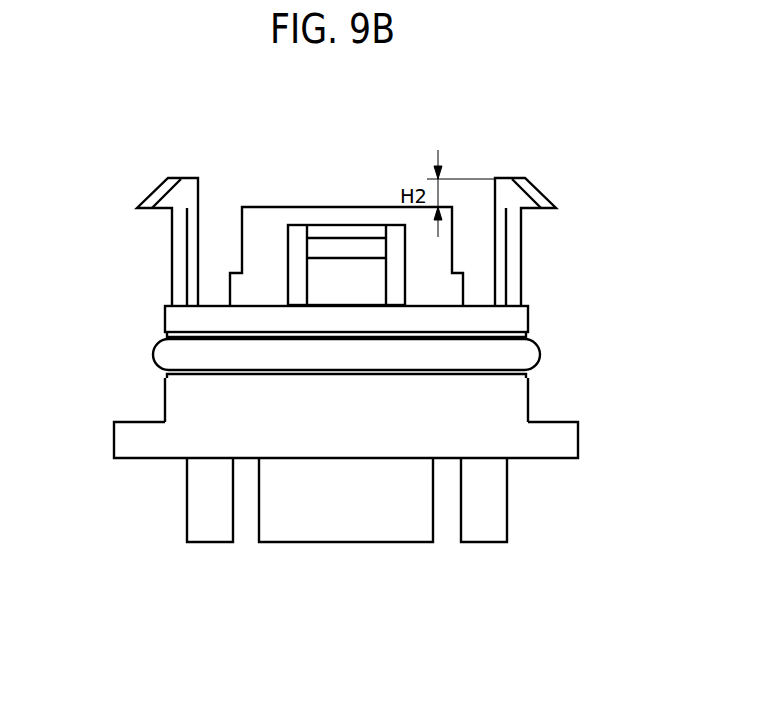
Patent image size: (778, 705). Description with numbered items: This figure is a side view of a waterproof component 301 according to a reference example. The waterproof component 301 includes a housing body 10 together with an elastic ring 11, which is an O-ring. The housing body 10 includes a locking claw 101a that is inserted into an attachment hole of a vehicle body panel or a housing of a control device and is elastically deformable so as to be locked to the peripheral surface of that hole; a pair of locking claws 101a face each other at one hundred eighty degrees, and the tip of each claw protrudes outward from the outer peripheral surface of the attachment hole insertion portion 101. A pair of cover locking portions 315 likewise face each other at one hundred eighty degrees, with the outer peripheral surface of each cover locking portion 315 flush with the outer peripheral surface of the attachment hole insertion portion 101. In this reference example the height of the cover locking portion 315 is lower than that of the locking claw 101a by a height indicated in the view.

The waterproof component 301 is at (363, 178).
The cover locking portion 315 is at (270, 230).
The locking claw 101a is at (180, 198).
The elastic ring 11 is at (163, 357).
The attachment hole insertion portion 101 is at (510, 401).
The housing body 10 is at (195, 508).